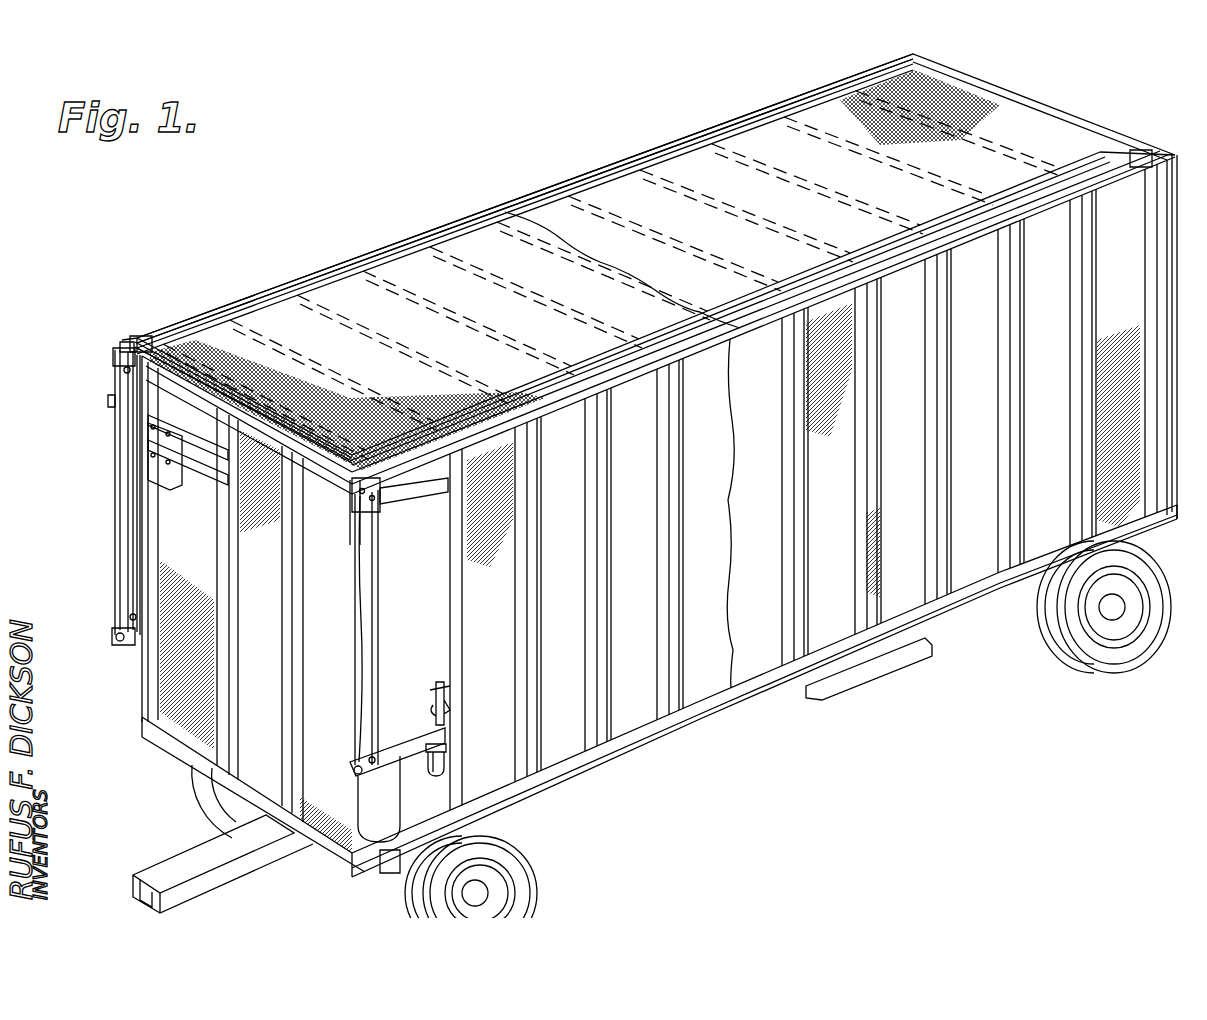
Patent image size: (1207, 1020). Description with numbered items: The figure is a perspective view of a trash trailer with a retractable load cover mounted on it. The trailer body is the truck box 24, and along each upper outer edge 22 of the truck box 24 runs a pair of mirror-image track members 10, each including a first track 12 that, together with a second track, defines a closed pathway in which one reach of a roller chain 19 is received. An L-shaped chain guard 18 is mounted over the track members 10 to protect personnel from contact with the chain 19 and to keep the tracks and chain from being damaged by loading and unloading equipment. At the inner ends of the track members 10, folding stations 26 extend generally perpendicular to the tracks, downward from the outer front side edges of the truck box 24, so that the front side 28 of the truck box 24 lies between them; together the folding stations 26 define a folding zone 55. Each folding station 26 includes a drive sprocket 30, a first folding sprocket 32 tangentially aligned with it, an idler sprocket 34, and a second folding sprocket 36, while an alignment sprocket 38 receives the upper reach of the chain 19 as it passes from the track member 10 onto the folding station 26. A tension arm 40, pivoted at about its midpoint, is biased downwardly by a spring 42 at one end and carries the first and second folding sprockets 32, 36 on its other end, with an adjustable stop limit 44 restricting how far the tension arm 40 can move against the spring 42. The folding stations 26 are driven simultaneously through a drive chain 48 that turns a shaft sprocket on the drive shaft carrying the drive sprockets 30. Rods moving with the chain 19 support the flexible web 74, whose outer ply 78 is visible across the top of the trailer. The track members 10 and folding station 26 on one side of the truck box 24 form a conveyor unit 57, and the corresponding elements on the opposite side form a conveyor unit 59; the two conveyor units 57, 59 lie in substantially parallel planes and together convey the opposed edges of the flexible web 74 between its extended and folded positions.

The track members 10 is at (790, 86).
The first track 12 is at (905, 167).
The L-shaped chain guard 18 is at (408, 238).
The roller chain 19 is at (115, 478).
The upper outer edge 22 is at (150, 340).
The truck box 24 is at (955, 627).
The folding stations 26 is at (108, 423).
The front side 28 is at (196, 715).
The drive sprocket 30 is at (128, 344).
The first folding sprocket 32 is at (128, 616).
The idler sprocket 34 is at (122, 371).
The second folding sprocket 36 is at (115, 645).
The alignment sprocket 38 is at (112, 356).
The tension arm 40 is at (378, 766).
The spring 42 is at (446, 710).
The adjustable stop limit 44 is at (446, 762).
The drive chain 48 is at (180, 408).
The folding zone 55 is at (231, 615).
The conveyor unit 57 is at (345, 516).
The conveyor unit 59 is at (128, 325).
The flexible web 74 is at (668, 170).
The outer ply 78 is at (720, 150).